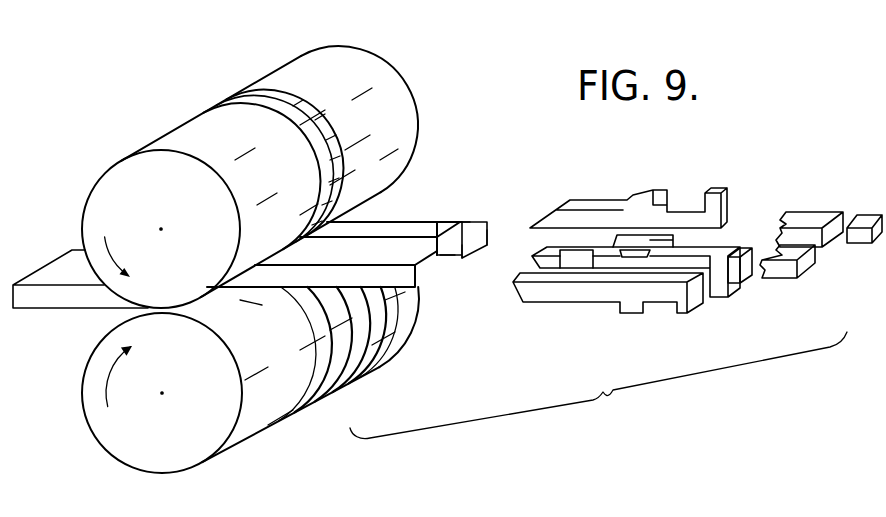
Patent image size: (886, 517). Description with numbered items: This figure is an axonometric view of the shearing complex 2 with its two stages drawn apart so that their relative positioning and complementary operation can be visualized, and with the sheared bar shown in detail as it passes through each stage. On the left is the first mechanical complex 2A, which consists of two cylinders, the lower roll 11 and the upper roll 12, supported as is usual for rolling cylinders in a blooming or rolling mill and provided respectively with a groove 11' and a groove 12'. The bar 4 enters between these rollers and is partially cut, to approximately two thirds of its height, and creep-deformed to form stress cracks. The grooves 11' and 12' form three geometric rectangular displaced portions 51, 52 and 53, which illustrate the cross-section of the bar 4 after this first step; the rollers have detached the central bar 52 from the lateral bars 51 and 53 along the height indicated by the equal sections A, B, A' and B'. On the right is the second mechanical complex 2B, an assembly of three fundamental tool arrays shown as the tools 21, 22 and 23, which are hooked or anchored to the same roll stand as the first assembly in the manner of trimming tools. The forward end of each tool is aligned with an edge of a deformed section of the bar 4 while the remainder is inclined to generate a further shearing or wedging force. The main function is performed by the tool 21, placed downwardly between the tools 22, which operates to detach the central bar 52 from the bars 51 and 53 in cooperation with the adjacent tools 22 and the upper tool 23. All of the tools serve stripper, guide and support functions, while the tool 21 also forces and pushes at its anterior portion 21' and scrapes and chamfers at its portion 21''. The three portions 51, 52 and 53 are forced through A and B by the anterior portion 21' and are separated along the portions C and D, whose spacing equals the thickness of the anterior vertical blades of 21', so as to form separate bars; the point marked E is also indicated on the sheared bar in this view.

The shearing complex 2 is at (544, 162).
The first mechanical complex 2A is at (268, 70).
The second mechanical complex 2B is at (690, 184).
The bar 4 is at (54, 261).
The lower cylinder 11 is at (230, 380).
The lower roll groove 11' is at (338, 380).
The upper cylinder 12 is at (231, 177).
The upper roll groove 12' is at (255, 162).
The tool 21 is at (638, 245).
The anterior portion of tool 21' is at (586, 214).
The scraping and chamfering portion of tool 21'' is at (641, 207).
The tool 22 is at (743, 273).
The tool 23 is at (722, 210).
The lateral bar portion 51 is at (373, 252).
The central bar portion 52 is at (437, 222).
The lateral bar portion 53 is at (473, 247).
The section A is at (445, 294).
The section A' is at (416, 215).
The section B is at (473, 276).
The section B' is at (481, 200).
The separating portion C is at (418, 270).
The separating portion D is at (480, 240).
The edge E is at (447, 255).